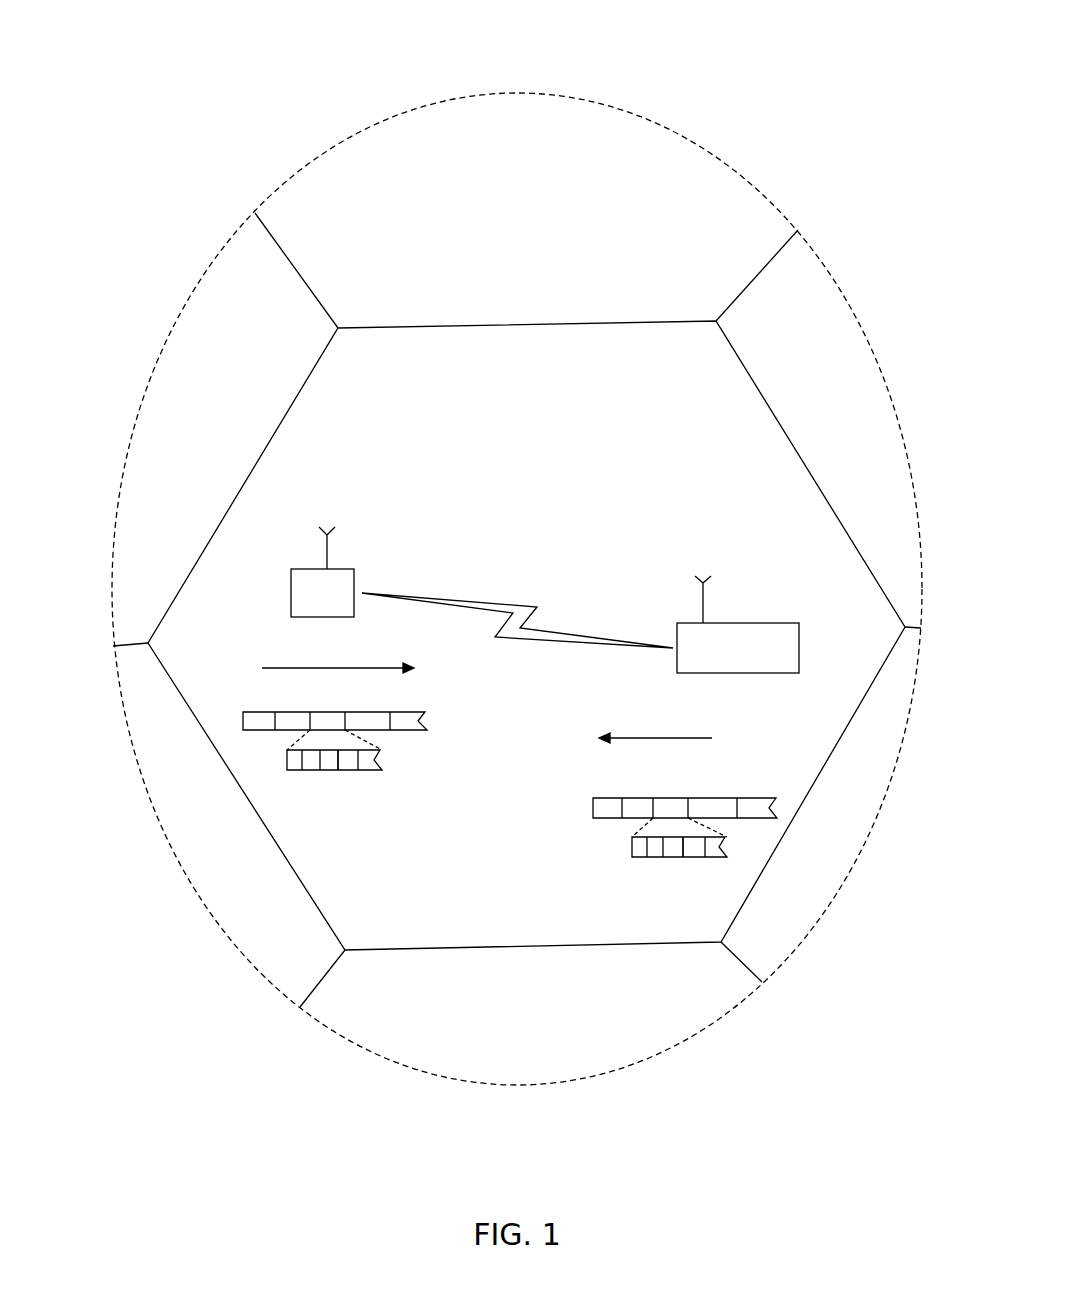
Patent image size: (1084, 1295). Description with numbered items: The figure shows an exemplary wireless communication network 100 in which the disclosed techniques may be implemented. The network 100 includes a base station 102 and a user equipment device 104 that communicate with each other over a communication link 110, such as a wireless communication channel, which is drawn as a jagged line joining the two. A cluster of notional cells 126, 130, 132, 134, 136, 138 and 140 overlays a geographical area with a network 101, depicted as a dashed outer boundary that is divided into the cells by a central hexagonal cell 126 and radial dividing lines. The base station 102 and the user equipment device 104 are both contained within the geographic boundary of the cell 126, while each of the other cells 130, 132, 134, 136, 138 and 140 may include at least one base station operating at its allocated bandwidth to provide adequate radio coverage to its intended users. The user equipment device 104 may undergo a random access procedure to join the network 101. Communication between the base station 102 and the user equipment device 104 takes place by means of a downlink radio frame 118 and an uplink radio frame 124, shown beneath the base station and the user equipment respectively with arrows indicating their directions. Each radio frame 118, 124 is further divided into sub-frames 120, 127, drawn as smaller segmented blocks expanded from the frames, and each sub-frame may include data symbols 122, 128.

The wireless communication network 100 is at (450, 46).
The network 101 is at (672, 118).
The base station 102 is at (291, 585).
The user equipment device 104 is at (770, 623).
The communication link 110 is at (512, 597).
The downlink radio frame 118 is at (243, 720).
The sub-frame 120 is at (287, 765).
The data symbol 122 is at (346, 762).
The uplink radio frame 124 is at (744, 793).
The cell 126 is at (378, 392).
The sub-frame 127 is at (632, 850).
The data symbol 128 is at (698, 858).
The cell 130 is at (208, 288).
The cell 132 is at (353, 160).
The cell 134 is at (821, 311).
The cell 136 is at (793, 920).
The cell 138 is at (397, 1025).
The cell 140 is at (215, 888).